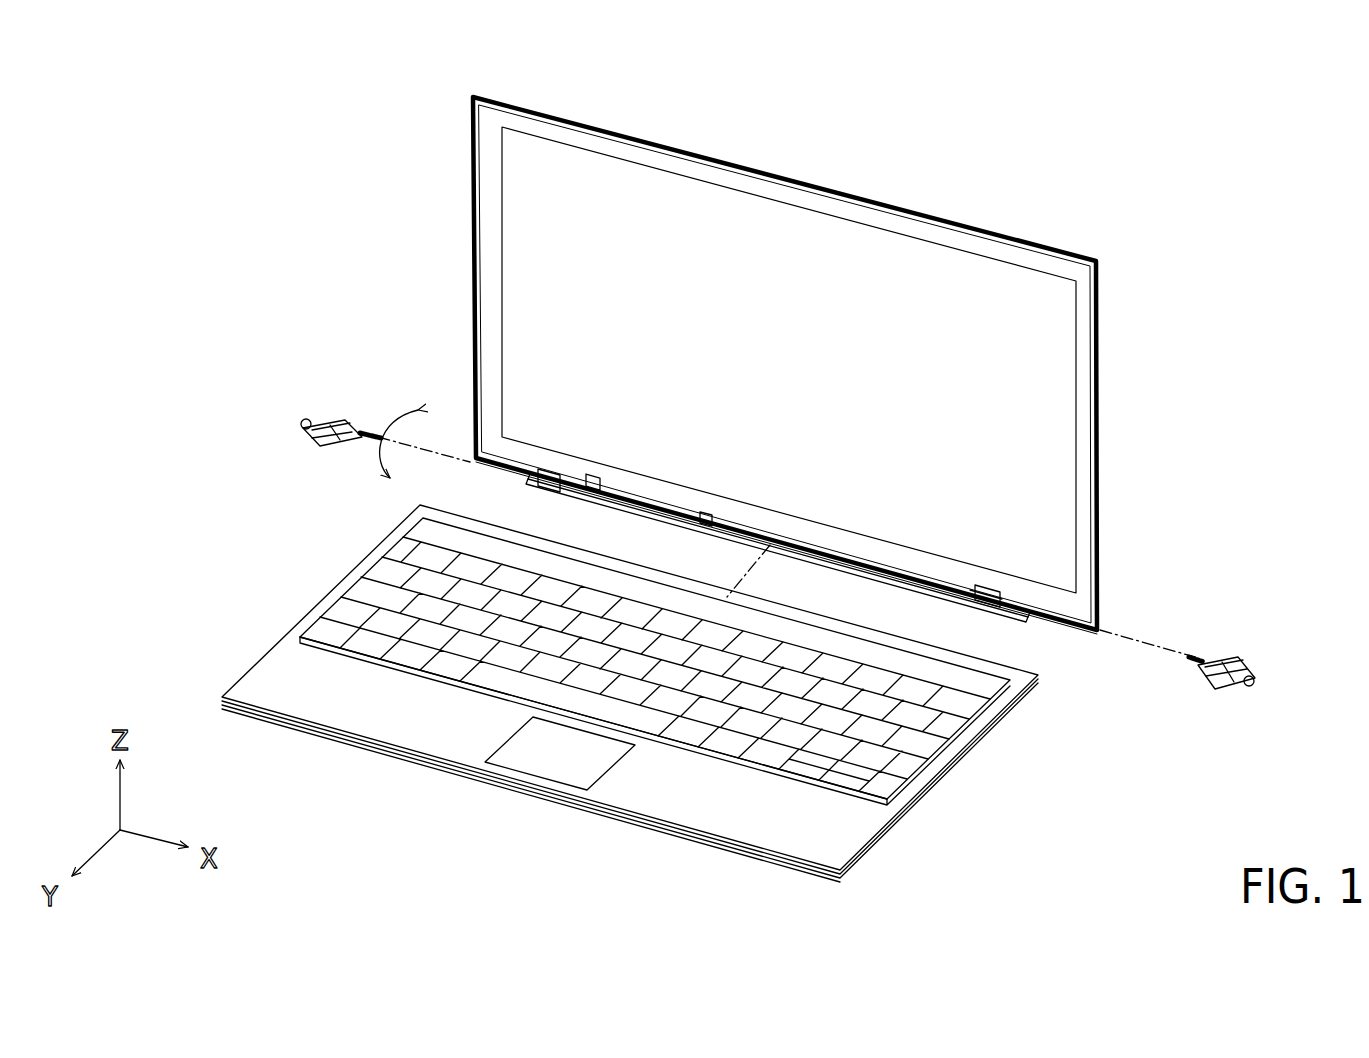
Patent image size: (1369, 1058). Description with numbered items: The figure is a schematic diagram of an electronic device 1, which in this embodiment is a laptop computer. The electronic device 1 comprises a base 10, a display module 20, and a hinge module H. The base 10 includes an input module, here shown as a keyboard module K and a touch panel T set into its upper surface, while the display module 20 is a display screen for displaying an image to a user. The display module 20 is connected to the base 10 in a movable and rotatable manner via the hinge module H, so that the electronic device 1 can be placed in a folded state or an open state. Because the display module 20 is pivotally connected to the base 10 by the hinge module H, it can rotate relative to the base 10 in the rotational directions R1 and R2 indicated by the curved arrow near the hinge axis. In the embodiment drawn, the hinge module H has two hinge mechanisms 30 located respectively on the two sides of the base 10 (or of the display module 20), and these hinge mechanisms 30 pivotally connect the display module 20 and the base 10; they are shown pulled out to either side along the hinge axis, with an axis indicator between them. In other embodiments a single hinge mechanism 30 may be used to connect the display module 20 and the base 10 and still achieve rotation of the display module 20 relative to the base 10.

The electronic device 1 is at (352, 64).
The base 10 is at (944, 778).
The display module 20 is at (1100, 453).
The hinge mechanism 30 is at (307, 417).
The hinge module H is at (214, 349).
The keyboard module K is at (385, 598).
The touch panel T is at (563, 758).
The rotational direction R1 is at (420, 437).
The rotational direction R2 is at (412, 485).